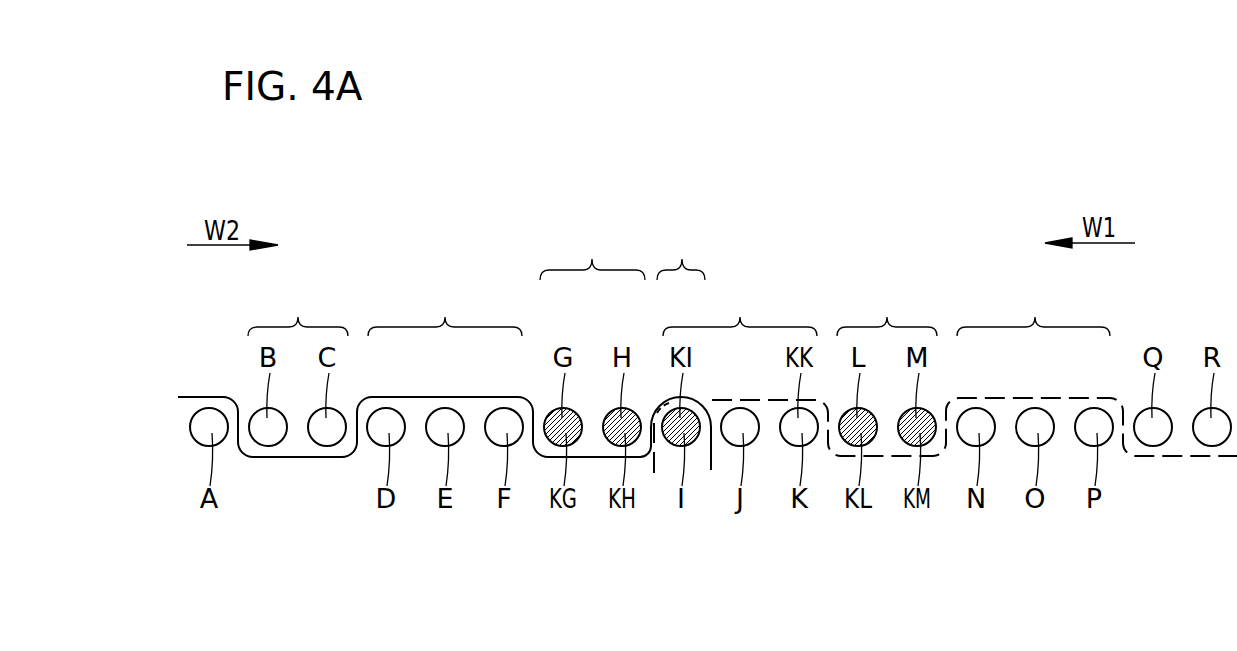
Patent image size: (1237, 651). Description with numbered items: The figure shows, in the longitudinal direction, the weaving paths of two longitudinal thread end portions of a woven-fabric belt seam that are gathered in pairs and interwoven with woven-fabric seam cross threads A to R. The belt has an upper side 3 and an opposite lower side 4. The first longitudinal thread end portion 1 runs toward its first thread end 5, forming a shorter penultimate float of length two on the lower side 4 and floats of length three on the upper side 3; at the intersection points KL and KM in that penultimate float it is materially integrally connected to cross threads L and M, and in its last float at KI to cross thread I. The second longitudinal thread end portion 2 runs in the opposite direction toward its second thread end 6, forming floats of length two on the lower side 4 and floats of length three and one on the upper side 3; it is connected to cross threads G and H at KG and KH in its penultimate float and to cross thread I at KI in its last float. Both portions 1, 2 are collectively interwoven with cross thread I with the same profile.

The first longitudinal thread end portion 1 is at (1087, 396).
The second longitudinal thread end portion 2 is at (280, 460).
The upper side 3 is at (351, 288).
The lower side 4 is at (318, 514).
The first thread end 5 is at (647, 462).
The second thread end 6 is at (711, 465).